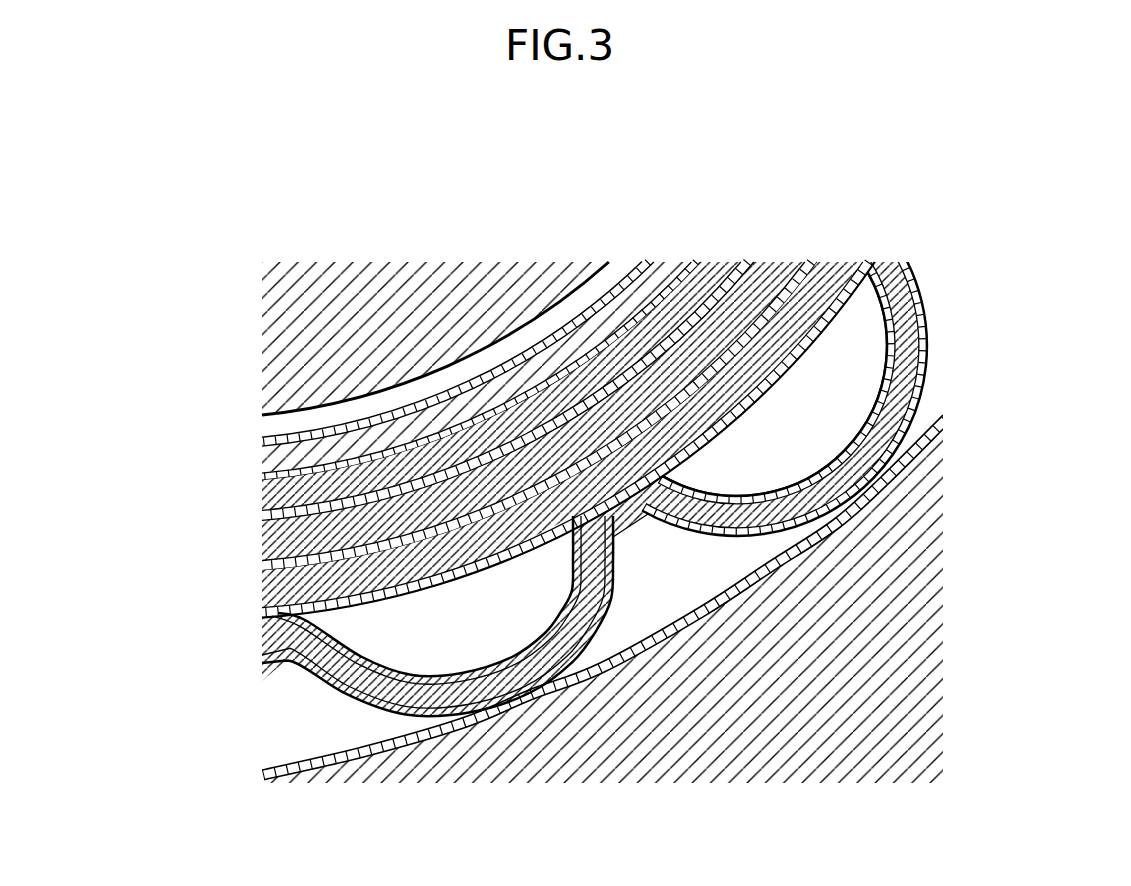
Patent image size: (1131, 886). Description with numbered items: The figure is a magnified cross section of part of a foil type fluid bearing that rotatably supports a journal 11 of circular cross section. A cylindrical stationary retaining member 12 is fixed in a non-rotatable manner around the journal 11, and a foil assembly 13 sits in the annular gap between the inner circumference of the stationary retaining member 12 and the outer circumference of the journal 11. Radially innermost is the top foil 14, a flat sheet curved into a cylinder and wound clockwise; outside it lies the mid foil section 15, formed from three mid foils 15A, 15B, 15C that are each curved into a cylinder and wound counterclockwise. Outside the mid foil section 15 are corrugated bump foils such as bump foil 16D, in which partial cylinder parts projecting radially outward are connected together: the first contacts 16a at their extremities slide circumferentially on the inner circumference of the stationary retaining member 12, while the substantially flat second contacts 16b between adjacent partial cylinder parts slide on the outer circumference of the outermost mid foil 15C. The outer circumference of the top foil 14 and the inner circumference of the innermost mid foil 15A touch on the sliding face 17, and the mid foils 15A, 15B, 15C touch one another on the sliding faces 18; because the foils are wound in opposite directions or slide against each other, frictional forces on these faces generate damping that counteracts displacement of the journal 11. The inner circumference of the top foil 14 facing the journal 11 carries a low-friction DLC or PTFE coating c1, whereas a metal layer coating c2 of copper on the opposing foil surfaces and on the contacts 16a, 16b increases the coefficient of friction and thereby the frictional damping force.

The journal 11 is at (471, 276).
The stationary retaining member 12 is at (922, 604).
The foil assembly 13 is at (188, 601).
The top foil 14 is at (606, 290).
The mid foil section 15 is at (905, 180).
The mid foil 15A is at (710, 283).
The mid foil 15B is at (783, 280).
The mid foil 15C is at (850, 278).
The first contact 16a is at (661, 560).
The second contact 16b is at (880, 275).
The bump foil 16D is at (938, 380).
The sliding face 17 is at (545, 365).
The sliding face 18 is at (740, 325).
The coating c1 is at (263, 415).
The metal layer coating c2 is at (265, 480).